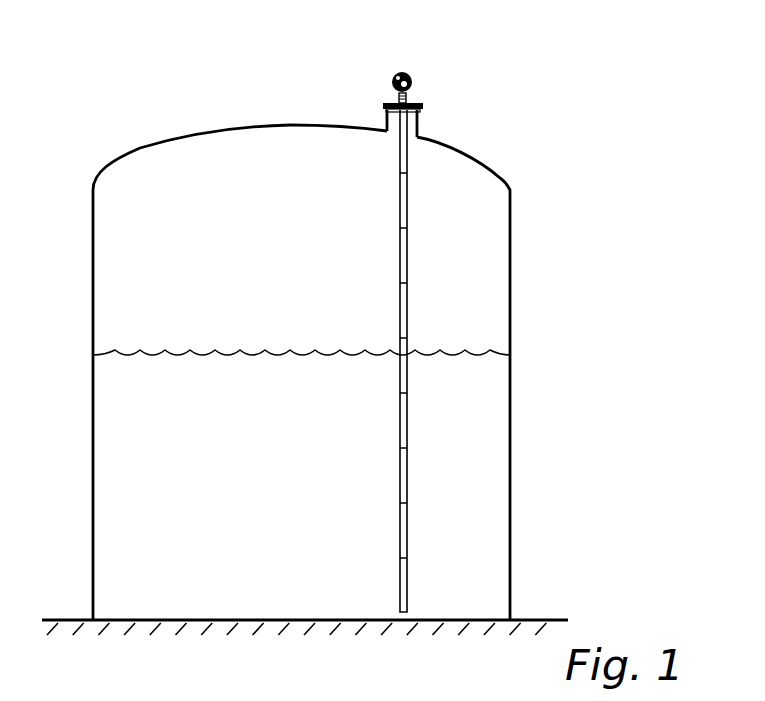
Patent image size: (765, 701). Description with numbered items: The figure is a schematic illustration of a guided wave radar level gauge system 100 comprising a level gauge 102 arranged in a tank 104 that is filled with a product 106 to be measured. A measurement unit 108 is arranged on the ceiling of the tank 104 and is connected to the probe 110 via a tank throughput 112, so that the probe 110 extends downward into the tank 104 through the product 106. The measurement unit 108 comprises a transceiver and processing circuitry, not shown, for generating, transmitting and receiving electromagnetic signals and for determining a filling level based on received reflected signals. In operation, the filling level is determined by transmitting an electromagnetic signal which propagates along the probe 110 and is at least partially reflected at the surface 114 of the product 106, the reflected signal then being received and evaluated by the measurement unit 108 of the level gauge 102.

The guided wave radar level gauge system 100 is at (532, 72).
The level gauge 102 is at (346, 60).
The tank 104 is at (511, 283).
The product 106 is at (283, 502).
The measurement unit 108 is at (409, 74).
The probe 110 is at (398, 258).
The tank throughput 112 is at (424, 108).
The surface 114 is at (208, 350).